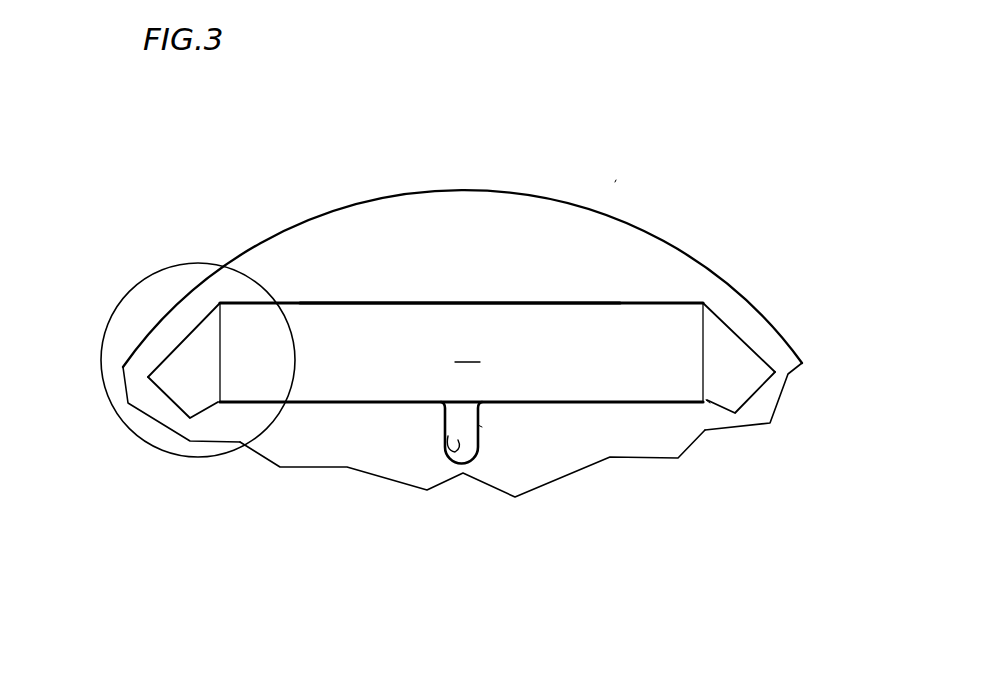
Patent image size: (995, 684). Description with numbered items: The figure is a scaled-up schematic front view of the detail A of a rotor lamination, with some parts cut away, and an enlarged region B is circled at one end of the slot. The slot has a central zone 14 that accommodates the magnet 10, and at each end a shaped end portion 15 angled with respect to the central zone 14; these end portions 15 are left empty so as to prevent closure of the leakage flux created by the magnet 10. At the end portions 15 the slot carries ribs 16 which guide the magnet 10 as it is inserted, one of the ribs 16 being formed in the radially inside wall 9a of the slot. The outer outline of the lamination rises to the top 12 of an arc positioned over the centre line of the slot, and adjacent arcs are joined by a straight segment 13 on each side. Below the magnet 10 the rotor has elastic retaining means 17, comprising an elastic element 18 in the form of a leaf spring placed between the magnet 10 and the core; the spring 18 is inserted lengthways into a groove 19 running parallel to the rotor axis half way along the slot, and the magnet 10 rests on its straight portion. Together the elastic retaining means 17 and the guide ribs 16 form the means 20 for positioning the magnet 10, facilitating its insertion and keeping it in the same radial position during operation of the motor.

The detail A is at (616, 177).
The enlarged detail region B is at (143, 281).
The radially inside wall 9a is at (347, 402).
The magnet 10 is at (461, 352).
The top 12 is at (460, 192).
The straight segment 13 is at (197, 290).
The central zone 14 is at (457, 320).
The shaped end portion 15 is at (183, 355).
The rib 16 is at (214, 404).
The elastic retaining means 17 is at (452, 418).
The elastic element 18 is at (470, 445).
The groove 19 is at (450, 434).
The means for positioning the magnets 20 is at (710, 403).